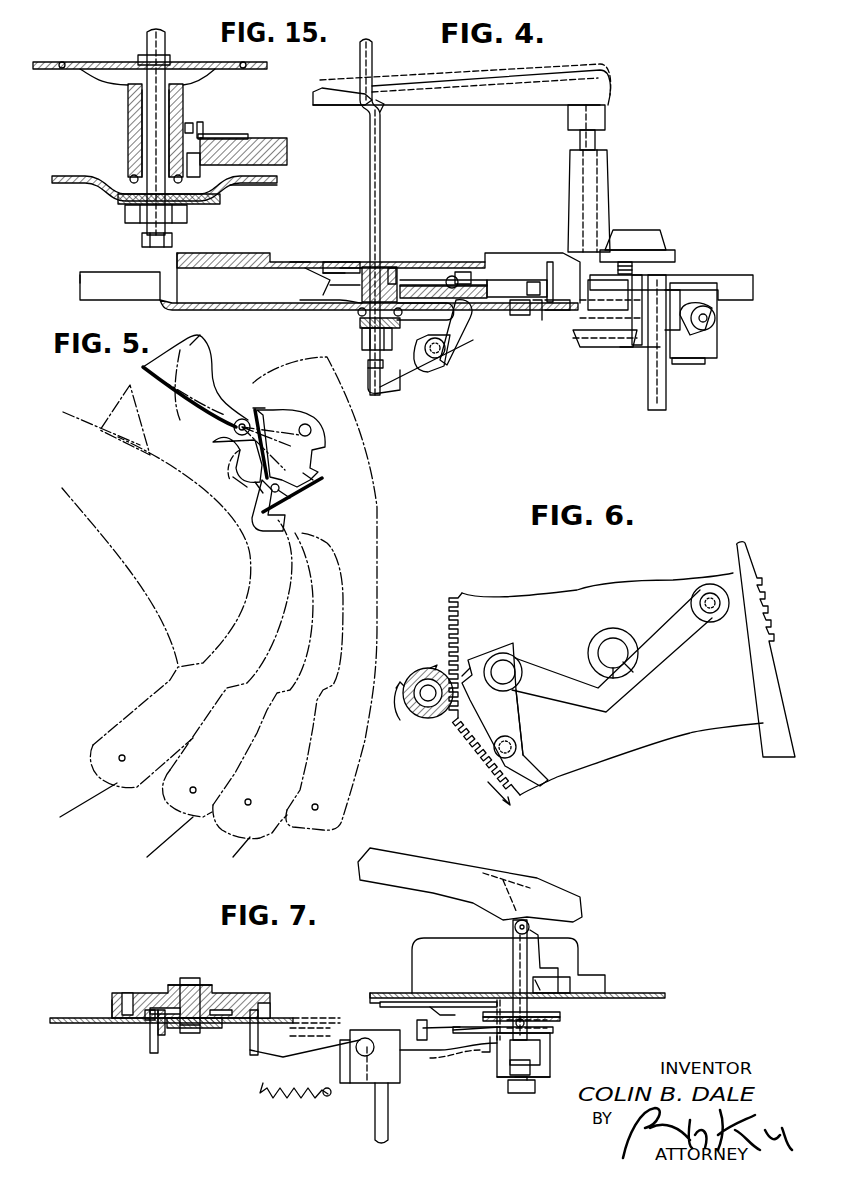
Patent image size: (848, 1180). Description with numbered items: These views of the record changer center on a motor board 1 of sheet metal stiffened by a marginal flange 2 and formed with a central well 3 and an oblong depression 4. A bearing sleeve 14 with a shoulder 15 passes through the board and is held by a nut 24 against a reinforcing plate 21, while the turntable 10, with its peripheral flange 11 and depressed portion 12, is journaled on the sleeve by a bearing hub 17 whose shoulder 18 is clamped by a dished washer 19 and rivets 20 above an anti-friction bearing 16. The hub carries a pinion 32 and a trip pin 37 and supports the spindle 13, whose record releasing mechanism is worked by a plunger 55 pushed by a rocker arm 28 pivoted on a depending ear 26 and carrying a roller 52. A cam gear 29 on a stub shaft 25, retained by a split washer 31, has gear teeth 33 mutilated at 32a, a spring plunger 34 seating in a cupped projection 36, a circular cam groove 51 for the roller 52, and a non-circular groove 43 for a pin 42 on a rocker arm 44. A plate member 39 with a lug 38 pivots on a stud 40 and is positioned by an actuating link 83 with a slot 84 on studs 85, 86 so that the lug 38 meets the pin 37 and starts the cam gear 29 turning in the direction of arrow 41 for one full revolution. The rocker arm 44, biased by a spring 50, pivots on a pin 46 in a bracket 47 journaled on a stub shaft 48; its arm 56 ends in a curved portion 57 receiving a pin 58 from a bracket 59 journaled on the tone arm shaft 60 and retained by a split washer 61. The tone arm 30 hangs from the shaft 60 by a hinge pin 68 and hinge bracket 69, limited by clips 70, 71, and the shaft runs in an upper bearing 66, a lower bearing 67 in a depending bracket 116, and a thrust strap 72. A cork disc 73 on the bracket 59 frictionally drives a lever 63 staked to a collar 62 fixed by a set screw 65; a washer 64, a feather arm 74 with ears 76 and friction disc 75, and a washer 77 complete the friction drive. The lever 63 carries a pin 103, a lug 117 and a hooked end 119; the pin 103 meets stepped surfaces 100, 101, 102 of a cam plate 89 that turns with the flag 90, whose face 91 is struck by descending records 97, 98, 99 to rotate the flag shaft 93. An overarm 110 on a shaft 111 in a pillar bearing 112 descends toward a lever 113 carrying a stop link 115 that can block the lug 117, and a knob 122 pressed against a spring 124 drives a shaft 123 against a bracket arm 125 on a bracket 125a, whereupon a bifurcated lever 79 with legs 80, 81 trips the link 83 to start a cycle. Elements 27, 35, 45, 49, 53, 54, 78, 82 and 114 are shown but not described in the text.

In FIG. 4, the motor board 1 is at (733, 272).
In FIG. 7, the motor board 1 is at (642, 993).
In FIG. 4, the marginal flange 2 is at (753, 285).
In FIG. 15, the central well 3 is at (272, 185).
In FIG. 4, the central well 3 is at (240, 310).
In FIG. 7, the central well 3 is at (70, 1024).
In FIG. 15, the oblong depression 4 is at (72, 176).
In FIG. 4, the oblong depression 4 is at (335, 305).
In FIG. 4, the turntable 10 is at (205, 253).
In FIG. 4, the depending peripheral flange 11 is at (178, 278).
In FIG. 15, the depressed portion 12 is at (95, 60).
In FIG. 4, the depressed portion 12 is at (412, 262).
In FIG. 15, the spindle 13 is at (168, 40).
In FIG. 4, the spindle 13 is at (382, 170).
In FIG. 4, the bearing sleeve 14 is at (358, 262).
In FIG. 4, the shoulder 15 is at (417, 318).
In FIG. 15, the anti-friction bearing 16 is at (130, 178).
In FIG. 4, the anti-friction bearing 16 is at (358, 315).
In FIG. 15, the bearing hub 17 is at (128, 105).
In FIG. 4, the bearing hub 17 is at (345, 285).
In FIG. 6, the bearing hub 17 is at (406, 710).
In FIG. 4, the shoulder 18 is at (335, 260).
In FIG. 15, the dished washer 19 is at (82, 76).
In FIG. 4, the dished washer 19 is at (320, 274).
In FIG. 4, the rivets 20 is at (305, 255).
In FIG. 15, the reinforcing plate 21 is at (222, 199).
In FIG. 4, the reinforcing plate 21 is at (362, 328).
In FIG. 7, the reinforcing plate 21 is at (210, 1030).
In FIG. 15, the nut 24 is at (124, 213).
In FIG. 4, the nut 24 is at (366, 348).
In FIG. 4, the stub shaft 25 is at (478, 270).
In FIG. 6, the stub shaft 25 is at (615, 650).
In FIG. 7, the stub shaft 25 is at (190, 978).
In FIG. 4, the depending ear 26 is at (432, 372).
In FIG. 4, the link 27 is at (460, 365).
In FIG. 4, the rocker arm 28 is at (426, 388).
In FIG. 7, the rocker arm 28 is at (150, 1048).
In FIG. 15, the cam gear 29 is at (262, 140).
In FIG. 4, the cam gear 29 is at (507, 307).
In FIG. 6, the cam gear 29 is at (490, 590).
In FIG. 7, the cam gear 29 is at (235, 992).
In FIG. 5, the tone arm 30 is at (130, 705).
In FIG. 7, the tone arm 30 is at (420, 855).
In FIG. 4, the split washer 31 is at (520, 253).
In FIG. 7, the split washer 31 is at (178, 986).
In FIG. 15, the pinion 32 is at (128, 146).
In FIG. 4, the pinion 32 is at (298, 270).
In FIG. 6, the pinion 32 is at (410, 684).
In FIG. 6, the mutilated portion 32a is at (468, 668).
In FIG. 15, the gear teeth 33 is at (195, 170).
In FIG. 6, the gear teeth 33 is at (450, 606).
In FIG. 7, the gear teeth 33 is at (110, 1005).
In FIG. 4, the spring influenced plunger 34 is at (535, 284).
In FIG. 4, the stop member 35 is at (540, 322).
In FIG. 4, the cupped projection 36 is at (522, 316).
In FIG. 15, the pin 37 is at (190, 122).
In FIG. 6, the pin 37 is at (432, 665).
In FIG. 15, the upstanding lug 38 is at (203, 126).
In FIG. 4, the upstanding lug 38 is at (395, 265).
In FIG. 6, the upstanding lug 38 is at (462, 692).
In FIG. 6, the plate member 39 is at (522, 718).
In FIG. 6, the pivot stud 40 is at (518, 750).
In FIG. 6, the arrow 41 is at (487, 767).
In FIG. 7, the upstanding pin 42 is at (250, 1040).
In FIG. 7, the non-circular cam groove 43 is at (126, 993).
In FIG. 7, the rocker arm 44 is at (318, 1028).
In FIG. 7, the lever bar 45 is at (270, 1058).
In FIG. 7, the pivot pin 46 is at (350, 1058).
In FIG. 7, the bracket 47 is at (345, 1030).
In FIG. 7, the stub shaft 48 is at (374, 1133).
In FIG. 7, the bracket 49 is at (355, 1088).
In FIG. 7, the spring 50 is at (262, 1098).
In FIG. 7, the circular cam groove 51 is at (160, 1008).
In FIG. 4, the roller 52 is at (508, 272).
In FIG. 7, the roller 52 is at (163, 1036).
In FIG. 4, the pin 53 is at (446, 348).
In FIG. 7, the pin 53 is at (145, 1020).
In FIG. 4, the lever 54 is at (372, 395).
In FIG. 15, the plunger 55 is at (141, 241).
In FIG. 4, the plunger 55 is at (368, 368).
In FIG. 7, the arm 56 is at (448, 1056).
In FIG. 7, the curved end portion 57 is at (470, 1060).
In FIG. 7, the pivot pin 58 is at (470, 1072).
In FIG. 7, the bracket member 59 is at (552, 1048).
In FIG. 5, the upstanding shaft 60 is at (308, 425).
In FIG. 7, the upstanding shaft 60 is at (512, 925).
In FIG. 7, the split spring washer 61 is at (542, 1055).
In FIG. 7, the collar 62 is at (470, 1028).
In FIG. 4, the lever 63 is at (700, 335).
In FIG. 5, the lever 63 is at (325, 452).
In FIG. 7, the lever 63 is at (555, 1032).
In FIG. 7, the washer 64 is at (562, 1015).
In FIG. 7, the set screw 65 is at (540, 1025).
In FIG. 7, the upper bearing 66 is at (538, 980).
In FIG. 7, the lower bearing 67 is at (550, 1077).
In FIG. 7, the hinge pin 68 is at (528, 924).
In FIG. 7, the hinge bracket 69 is at (500, 868).
In FIG. 7, the clip 70 is at (540, 930).
In FIG. 7, the complementary clip 71 is at (580, 955).
In FIG. 7, the strap 72 is at (518, 1093).
In FIG. 4, the disc 73 is at (384, 116).
In FIG. 7, the disc 73 is at (438, 1007).
In FIG. 7, the feather arm 74 is at (405, 1002).
In FIG. 7, the friction disc 75 is at (485, 1012).
In FIG. 7, the downwardly bent ears 76 is at (560, 975).
In FIG. 7, the washer 77 is at (497, 1000).
In FIG. 7, the bracket 78 is at (370, 993).
In FIG. 4, the bifurcated lever 79 is at (550, 258).
In FIG. 4, the leg 80 is at (600, 292).
In FIG. 6, the leg 81 is at (745, 548).
In FIG. 4, the member 82 is at (560, 311).
In FIG. 4, the actuating link 83 is at (462, 272).
In FIG. 6, the actuating link 83 is at (668, 658).
In FIG. 6, the elongated slot 84 is at (700, 596).
In FIG. 4, the pivot stud 85 is at (452, 275).
In FIG. 6, the pivot stud 85 is at (712, 614).
In FIG. 6, the pivot stud 86 is at (508, 668).
In FIG. 5, the shouldered cam plate 89 is at (278, 424).
In FIG. 5, the flag 90 is at (212, 365).
In FIG. 5, the sloping face 91 is at (185, 340).
In FIG. 5, the flag shaft 93 is at (242, 418).
In FIG. 7, the flag shaft 93 is at (415, 1025).
In FIG. 5, the record tablet 97 is at (62, 817).
In FIG. 5, the record tablet 98 is at (150, 860).
In FIG. 5, the record tablet 99 is at (252, 875).
In FIG. 5, the stepped shoulder 100 is at (210, 455).
In FIG. 5, the shoulder 101 is at (230, 480).
In FIG. 5, the stepped surface 102 is at (252, 490).
In FIG. 5, the upstanding pin 103 is at (296, 496).
In FIG. 7, the upstanding pin 103 is at (440, 1018).
In FIG. 4, the overarm 110 is at (458, 103).
In FIG. 4, the shaft 111 is at (596, 135).
In FIG. 4, the pillar bearing 112 is at (608, 160).
In FIG. 4, the pivoted lever 113 is at (618, 350).
In FIG. 4, the pivot 114 is at (708, 322).
In FIG. 4, the stop link 115 is at (718, 302).
In FIG. 4, the depending bracket 116 is at (700, 366).
In FIG. 7, the depending bracket 116 is at (530, 1068).
In FIG. 5, the laterally projecting lug 117 is at (260, 405).
In FIG. 5, the hooked free end portion 119 is at (273, 533).
In FIG. 4, the uni-control knob 122 is at (645, 222).
In FIG. 4, the upstanding shaft 123 is at (598, 348).
In FIG. 4, the spring 124 is at (660, 260).
In FIG. 4, the bracket arm 125 is at (636, 350).
In FIG. 4, the depending bracket 125a is at (666, 392).